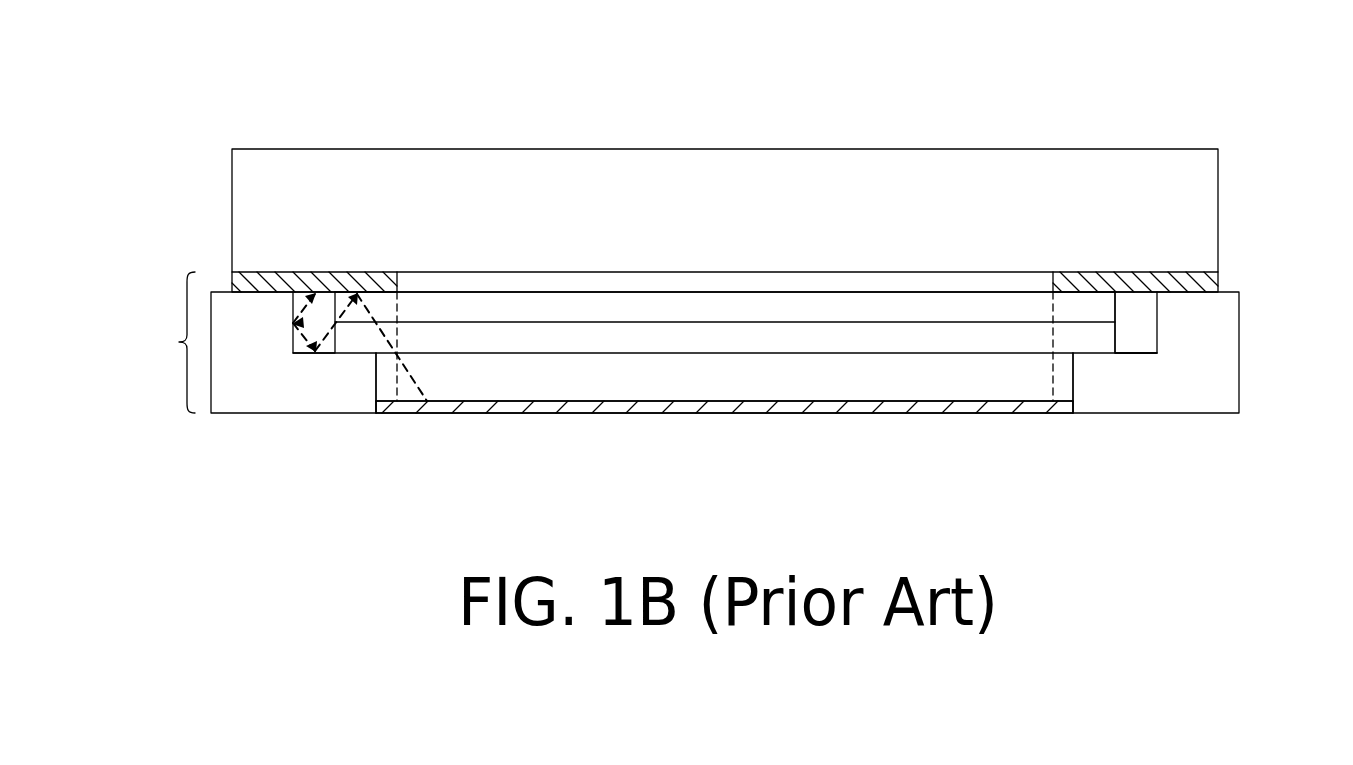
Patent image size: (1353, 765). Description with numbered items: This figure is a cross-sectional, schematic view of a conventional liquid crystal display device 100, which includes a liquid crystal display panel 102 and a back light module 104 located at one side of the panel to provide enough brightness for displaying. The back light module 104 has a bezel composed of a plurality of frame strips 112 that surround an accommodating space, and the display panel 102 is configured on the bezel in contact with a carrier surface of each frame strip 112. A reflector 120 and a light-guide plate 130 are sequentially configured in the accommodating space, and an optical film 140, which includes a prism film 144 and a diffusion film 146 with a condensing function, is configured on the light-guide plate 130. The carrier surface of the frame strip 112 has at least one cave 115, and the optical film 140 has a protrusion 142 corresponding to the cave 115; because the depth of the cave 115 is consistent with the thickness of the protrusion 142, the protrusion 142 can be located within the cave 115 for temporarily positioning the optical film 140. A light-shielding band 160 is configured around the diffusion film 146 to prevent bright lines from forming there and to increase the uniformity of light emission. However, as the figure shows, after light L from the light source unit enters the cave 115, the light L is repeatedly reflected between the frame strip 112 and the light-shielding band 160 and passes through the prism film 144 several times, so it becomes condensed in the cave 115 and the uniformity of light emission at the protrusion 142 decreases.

The liquid crystal display device 100 is at (1293, 499).
The liquid crystal display panel 102 is at (1207, 177).
The back light module 104 is at (158, 342).
The frame strip 112 is at (277, 403).
The cave 115 is at (1132, 322).
The reflector 120 is at (698, 405).
The light-guide plate 130 is at (565, 387).
The optical film 140 is at (725, 195).
The protrusion 142 is at (377, 303).
The prism film 144 is at (597, 305).
The diffusion film 146 is at (737, 340).
The light-shielding band 160 is at (267, 282).
The light L is at (419, 416).